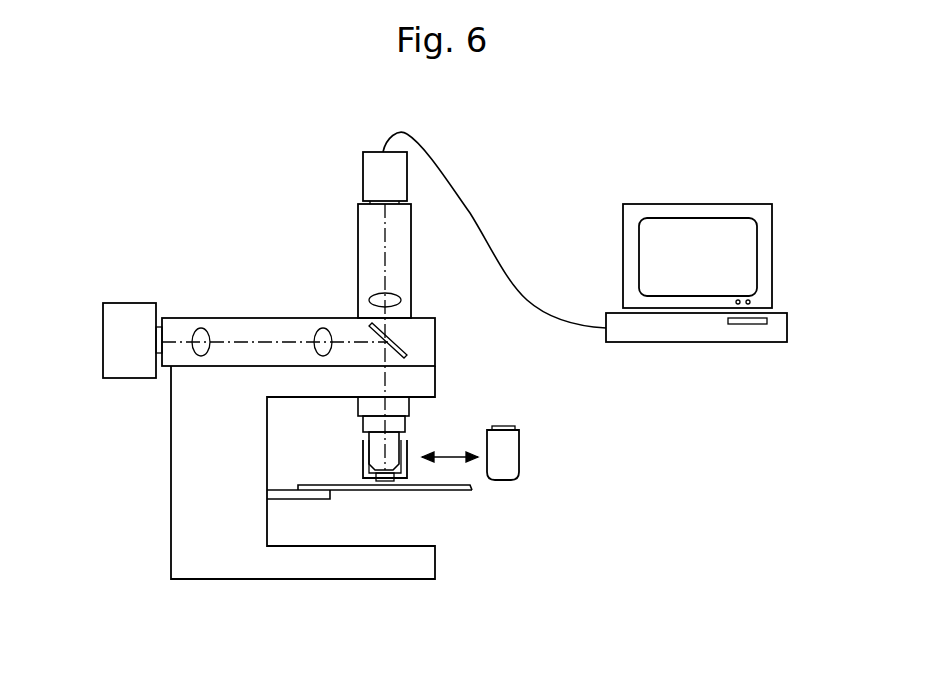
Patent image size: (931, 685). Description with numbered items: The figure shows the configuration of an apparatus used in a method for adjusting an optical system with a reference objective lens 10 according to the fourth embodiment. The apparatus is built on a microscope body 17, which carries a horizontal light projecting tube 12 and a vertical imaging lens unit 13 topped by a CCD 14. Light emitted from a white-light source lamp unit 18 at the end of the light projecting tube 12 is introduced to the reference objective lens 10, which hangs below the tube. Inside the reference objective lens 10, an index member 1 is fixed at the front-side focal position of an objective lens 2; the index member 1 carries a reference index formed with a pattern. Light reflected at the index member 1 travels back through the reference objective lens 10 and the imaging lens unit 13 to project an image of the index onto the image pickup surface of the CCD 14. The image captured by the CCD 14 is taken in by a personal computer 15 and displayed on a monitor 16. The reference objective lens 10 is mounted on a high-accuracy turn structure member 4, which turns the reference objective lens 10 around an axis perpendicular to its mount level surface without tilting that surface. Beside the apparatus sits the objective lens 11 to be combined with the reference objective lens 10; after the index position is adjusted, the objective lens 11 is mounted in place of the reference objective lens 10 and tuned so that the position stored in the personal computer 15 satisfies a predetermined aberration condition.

The index member 1 is at (440, 491).
The objective lens 2 is at (366, 455).
The high-accuracy turn structure member 4 is at (429, 398).
The reference objective lens 10 is at (350, 466).
The objective lens 11 is at (512, 452).
The light projecting tube 12 is at (415, 330).
The imaging lens unit 13 is at (398, 256).
The CCD 14 is at (363, 186).
The personal computer 15 is at (773, 332).
The monitor 16 is at (762, 252).
The microscope body 17 is at (170, 475).
The white-light source lamp unit 18 is at (120, 337).